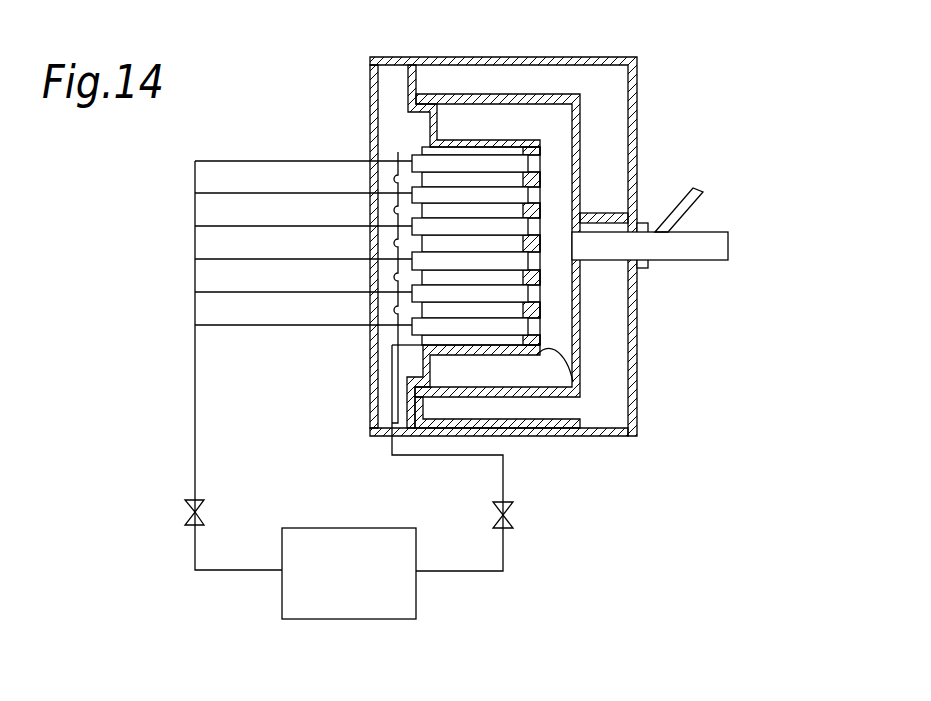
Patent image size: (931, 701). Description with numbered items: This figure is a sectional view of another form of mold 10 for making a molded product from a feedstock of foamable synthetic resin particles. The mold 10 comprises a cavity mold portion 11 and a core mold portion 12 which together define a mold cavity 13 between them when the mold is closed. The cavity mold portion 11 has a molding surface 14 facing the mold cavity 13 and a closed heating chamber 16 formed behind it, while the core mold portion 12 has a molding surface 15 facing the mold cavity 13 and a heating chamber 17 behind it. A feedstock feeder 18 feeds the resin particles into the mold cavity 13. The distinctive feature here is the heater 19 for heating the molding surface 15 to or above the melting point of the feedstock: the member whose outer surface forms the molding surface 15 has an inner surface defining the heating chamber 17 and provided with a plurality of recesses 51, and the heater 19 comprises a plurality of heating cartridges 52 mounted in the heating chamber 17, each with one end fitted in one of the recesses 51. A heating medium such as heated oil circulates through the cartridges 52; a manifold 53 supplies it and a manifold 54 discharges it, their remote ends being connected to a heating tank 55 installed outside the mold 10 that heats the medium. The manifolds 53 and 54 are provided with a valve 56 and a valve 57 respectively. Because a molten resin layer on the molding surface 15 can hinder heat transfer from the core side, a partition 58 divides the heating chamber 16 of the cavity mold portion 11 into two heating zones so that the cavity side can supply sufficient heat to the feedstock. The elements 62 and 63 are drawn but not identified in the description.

The mold 10 is at (364, 95).
The cavity mold portion 11 is at (639, 379).
The core mold portion 12 is at (372, 385).
The mold cavity 13 is at (566, 180).
The molding surface 14 is at (570, 322).
The molding surface 15 is at (580, 378).
The heating chamber 16 is at (613, 410).
The heating chamber 17 is at (388, 432).
The feedstock feeder 18 is at (697, 248).
The heater 19 is at (484, 148).
The recesses 51 is at (540, 152).
The heating cartridges 52 is at (467, 197).
The manifold 53 is at (195, 212).
The manifold 54 is at (390, 360).
The heating tank 55 is at (347, 598).
The valve 56 is at (185, 518).
The valve 57 is at (513, 517).
The partition 58 is at (607, 217).
The coolant pipe 62 is at (278, 192).
The stator teeth 63 is at (400, 160).